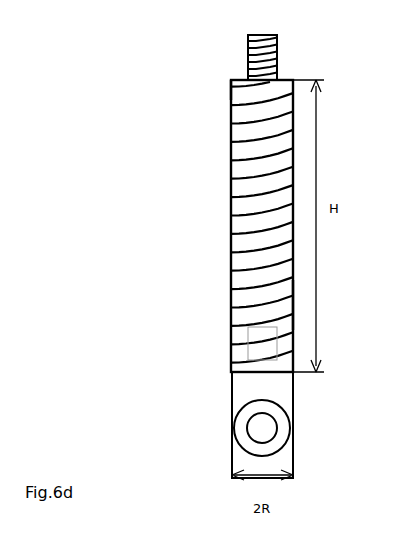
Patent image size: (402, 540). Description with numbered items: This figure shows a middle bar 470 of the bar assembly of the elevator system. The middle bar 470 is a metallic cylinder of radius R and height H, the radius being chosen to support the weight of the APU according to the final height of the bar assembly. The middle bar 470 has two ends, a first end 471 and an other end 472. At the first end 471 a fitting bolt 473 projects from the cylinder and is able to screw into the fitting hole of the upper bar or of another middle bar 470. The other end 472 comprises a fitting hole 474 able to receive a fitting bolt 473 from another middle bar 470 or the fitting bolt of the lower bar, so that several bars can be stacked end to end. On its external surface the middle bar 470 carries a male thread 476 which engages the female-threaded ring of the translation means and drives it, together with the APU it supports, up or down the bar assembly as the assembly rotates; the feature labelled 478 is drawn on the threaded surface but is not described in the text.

The middle bar 470 is at (231, 182).
The first end 471 is at (229, 82).
The other end 472 is at (295, 302).
The fitting bolt 473 is at (278, 52).
The fitting hole 474 is at (256, 378).
The male thread 476 is at (258, 430).
The thread groove 478 is at (231, 265).